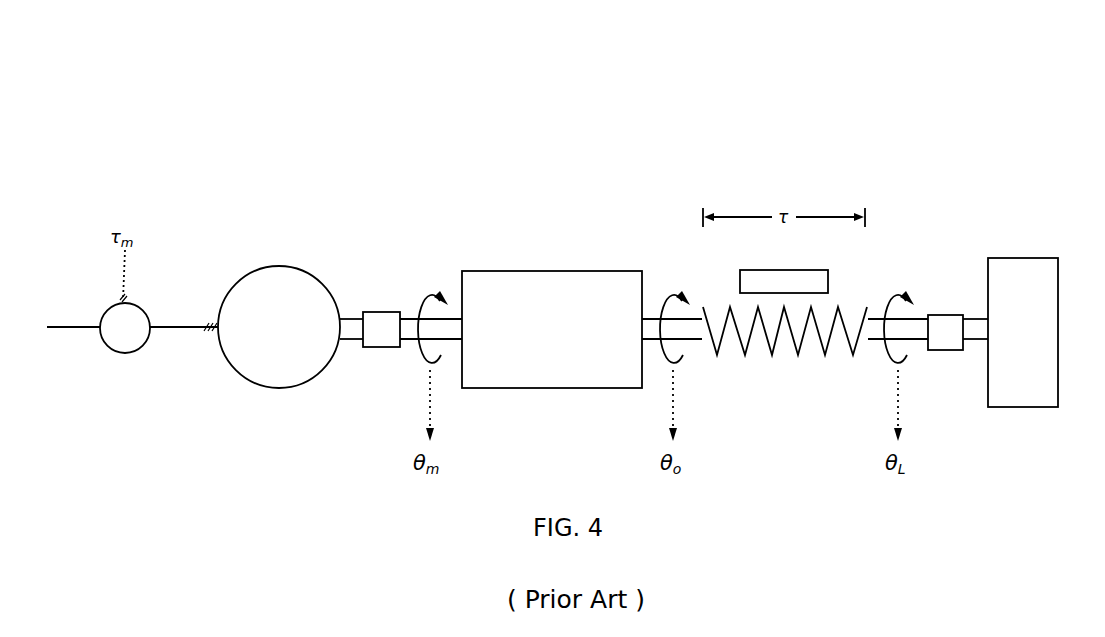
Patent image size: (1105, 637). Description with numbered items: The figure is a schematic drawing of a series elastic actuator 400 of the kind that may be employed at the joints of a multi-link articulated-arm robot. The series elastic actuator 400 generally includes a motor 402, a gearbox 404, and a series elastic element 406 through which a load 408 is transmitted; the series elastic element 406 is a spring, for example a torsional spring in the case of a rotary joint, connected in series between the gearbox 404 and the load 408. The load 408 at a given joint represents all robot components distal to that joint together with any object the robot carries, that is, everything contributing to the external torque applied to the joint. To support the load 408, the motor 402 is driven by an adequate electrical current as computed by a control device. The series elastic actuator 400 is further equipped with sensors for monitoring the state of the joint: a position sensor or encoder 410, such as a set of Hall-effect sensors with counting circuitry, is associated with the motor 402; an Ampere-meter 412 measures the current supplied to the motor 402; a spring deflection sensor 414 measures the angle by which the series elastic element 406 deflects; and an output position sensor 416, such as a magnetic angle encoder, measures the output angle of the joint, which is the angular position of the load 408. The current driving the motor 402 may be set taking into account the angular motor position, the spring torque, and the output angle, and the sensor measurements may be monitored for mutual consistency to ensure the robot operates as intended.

The series elastic actuator 400 is at (225, 116).
The motor 402 is at (251, 268).
The gearbox 404 is at (578, 270).
The series elastic element 406 is at (777, 347).
The load 408 is at (1032, 258).
The position sensor or encoder 410 is at (380, 312).
The Ampere-meter 412 is at (112, 353).
The spring deflection sensor 414 is at (800, 270).
The output position sensor 416 is at (945, 315).